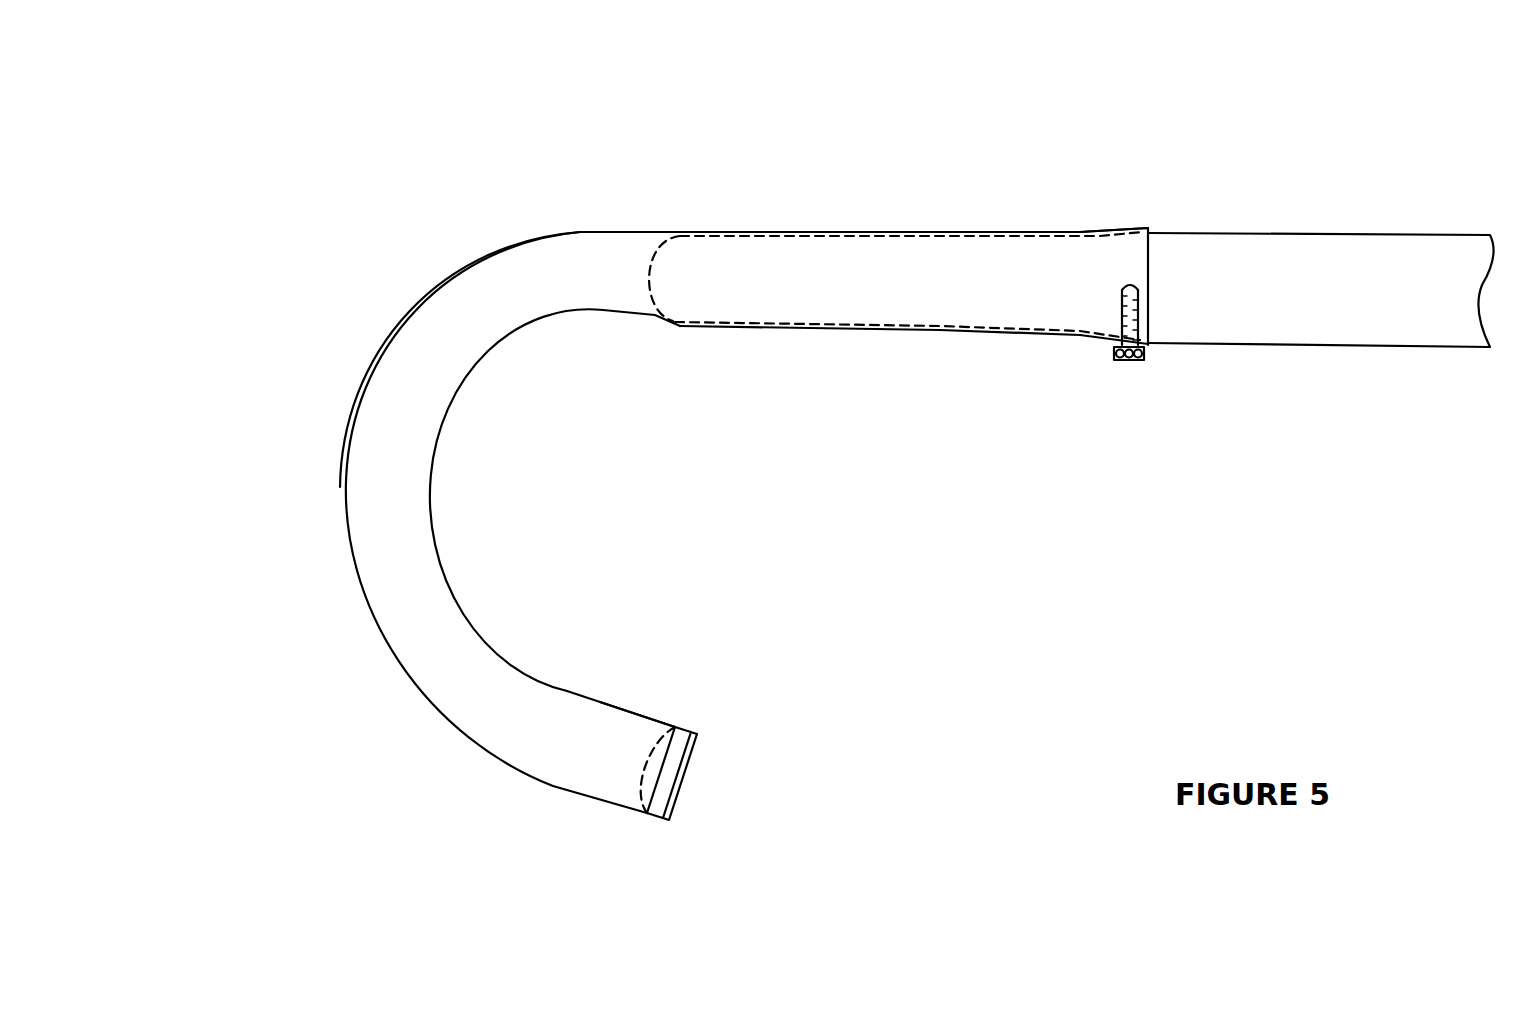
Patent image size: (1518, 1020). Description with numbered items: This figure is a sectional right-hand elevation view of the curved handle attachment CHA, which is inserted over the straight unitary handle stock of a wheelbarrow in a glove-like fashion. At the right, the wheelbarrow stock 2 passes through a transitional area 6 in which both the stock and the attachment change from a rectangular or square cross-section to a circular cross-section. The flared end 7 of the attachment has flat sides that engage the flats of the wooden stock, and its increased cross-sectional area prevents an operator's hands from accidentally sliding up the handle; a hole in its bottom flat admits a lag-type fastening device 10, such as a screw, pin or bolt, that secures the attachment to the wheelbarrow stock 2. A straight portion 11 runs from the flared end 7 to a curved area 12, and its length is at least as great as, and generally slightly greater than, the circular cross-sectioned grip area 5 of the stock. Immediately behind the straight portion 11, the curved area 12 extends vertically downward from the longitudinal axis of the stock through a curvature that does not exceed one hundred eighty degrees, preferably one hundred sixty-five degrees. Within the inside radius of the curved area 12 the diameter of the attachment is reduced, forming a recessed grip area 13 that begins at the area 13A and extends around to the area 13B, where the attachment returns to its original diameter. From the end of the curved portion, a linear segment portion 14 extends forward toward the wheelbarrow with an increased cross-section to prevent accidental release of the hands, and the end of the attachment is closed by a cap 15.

The wheelbarrow stock 2 is at (1335, 235).
The grip area 5 is at (780, 278).
The transitional area 6 is at (1105, 228).
The flared end 7 is at (1081, 360).
The lag-type fastening device 10 is at (1132, 360).
The straight portion 11 is at (808, 330).
The curved area 12 is at (368, 374).
The recessed grip area 13 is at (425, 505).
The beginning of recessed grip area 13A is at (661, 342).
The end of recessed grip area 13B is at (590, 669).
The linear segment portion 14 is at (655, 713).
The cap 15 is at (688, 783).
The curved handle attachment CHA is at (405, 284).